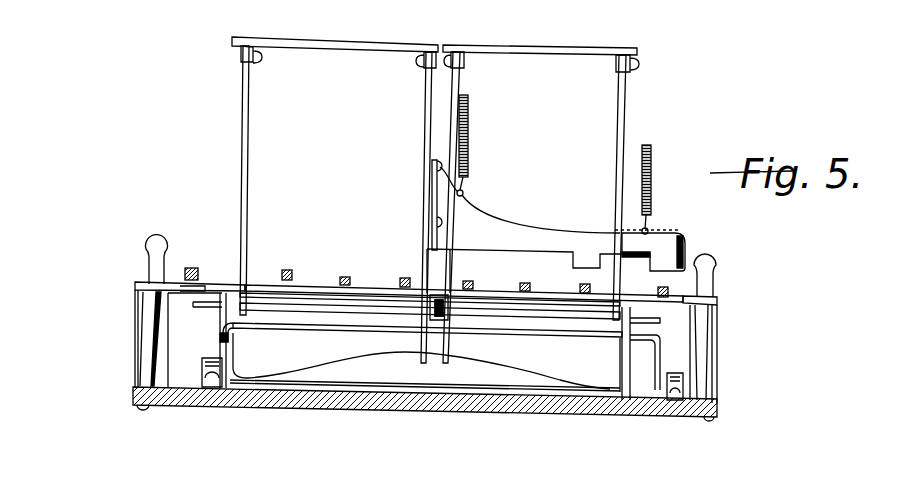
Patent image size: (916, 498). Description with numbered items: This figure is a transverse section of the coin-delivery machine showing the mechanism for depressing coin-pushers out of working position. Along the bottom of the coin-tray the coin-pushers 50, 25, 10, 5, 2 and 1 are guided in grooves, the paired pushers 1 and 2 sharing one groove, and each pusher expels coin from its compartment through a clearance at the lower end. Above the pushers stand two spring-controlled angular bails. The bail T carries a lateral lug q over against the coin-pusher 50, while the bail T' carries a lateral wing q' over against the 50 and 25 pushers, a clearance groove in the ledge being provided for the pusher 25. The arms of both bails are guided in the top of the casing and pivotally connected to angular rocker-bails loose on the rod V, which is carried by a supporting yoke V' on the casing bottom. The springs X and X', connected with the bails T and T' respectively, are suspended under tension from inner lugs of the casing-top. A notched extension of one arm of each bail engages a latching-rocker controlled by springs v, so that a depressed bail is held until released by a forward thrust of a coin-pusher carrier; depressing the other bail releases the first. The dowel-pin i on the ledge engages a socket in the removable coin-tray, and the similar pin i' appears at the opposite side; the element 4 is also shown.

The angular spring-controlled bail T' is at (335, 200).
The spring-controlled angular bail T is at (541, 204).
The spring X' is at (483, 145).
The spring X is at (666, 189).
The lateral wing q' is at (541, 216).
The lateral lug q is at (659, 238).
The left knob i' is at (143, 259).
The dowel-pin i is at (721, 275).
The supporting yoke V' is at (461, 323).
The controlling spring v is at (488, 300).
The rod V is at (422, 330).
The block 4 is at (198, 258).
The coin-pusher 1 is at (285, 270).
The coin-pusher 2 is at (292, 274).
The coin-pusher 5 is at (405, 278).
The coin-pusher 10 is at (467, 281).
The coin-pusher 25 is at (584, 286).
The coin-pusher 50 is at (662, 290).